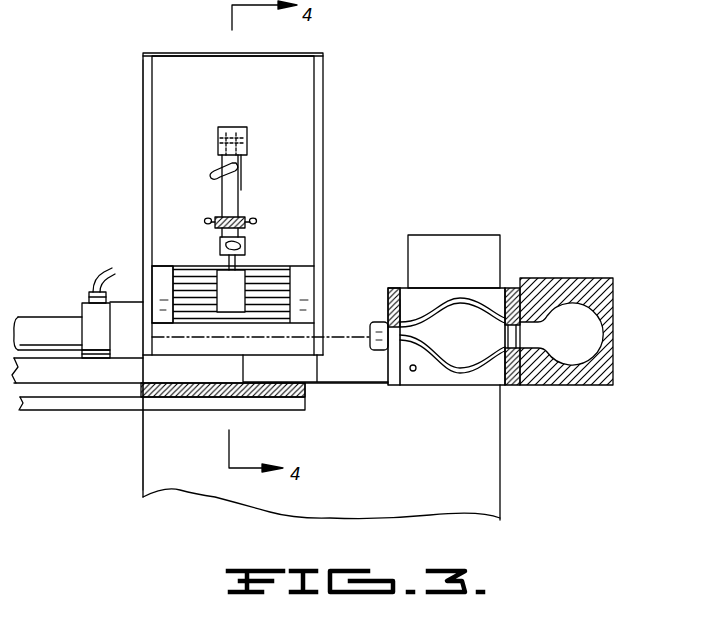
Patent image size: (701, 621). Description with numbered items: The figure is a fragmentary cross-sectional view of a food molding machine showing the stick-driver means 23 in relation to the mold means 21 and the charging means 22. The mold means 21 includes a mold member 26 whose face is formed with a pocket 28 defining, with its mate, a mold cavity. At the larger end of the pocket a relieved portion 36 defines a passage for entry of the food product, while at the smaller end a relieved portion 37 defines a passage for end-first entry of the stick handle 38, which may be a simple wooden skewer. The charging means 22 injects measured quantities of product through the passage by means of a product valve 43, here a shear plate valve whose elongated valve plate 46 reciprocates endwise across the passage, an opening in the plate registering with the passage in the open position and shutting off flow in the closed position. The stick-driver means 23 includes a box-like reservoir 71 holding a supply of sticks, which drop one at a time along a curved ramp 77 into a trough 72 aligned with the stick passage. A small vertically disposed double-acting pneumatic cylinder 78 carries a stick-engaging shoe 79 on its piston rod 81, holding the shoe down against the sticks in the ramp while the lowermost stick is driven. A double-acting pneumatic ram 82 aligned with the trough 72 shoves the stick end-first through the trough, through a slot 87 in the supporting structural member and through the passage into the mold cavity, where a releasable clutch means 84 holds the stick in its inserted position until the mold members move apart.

The mold means 21 is at (397, 280).
The charging means 22 is at (584, 272).
The stick-driver means 23 is at (330, 103).
The mold member 26 is at (490, 300).
The pocket 28 is at (452, 335).
The relieved portion 36 is at (500, 342).
The relieved portion 37 is at (406, 345).
The stick handle 38 is at (262, 278).
The product valve 43 is at (536, 335).
The valve plate 46 is at (518, 288).
The reservoir 71 is at (143, 128).
The trough 72 is at (195, 340).
The curved ramp 77 is at (172, 279).
The pneumatic cylinder 78 is at (238, 187).
The stick-engaging shoe 79 is at (217, 279).
The piston rod 81 is at (244, 246).
The pneumatic ram 82 is at (47, 322).
The releasable clutch means 84 is at (366, 356).
The slot 87 is at (392, 364).